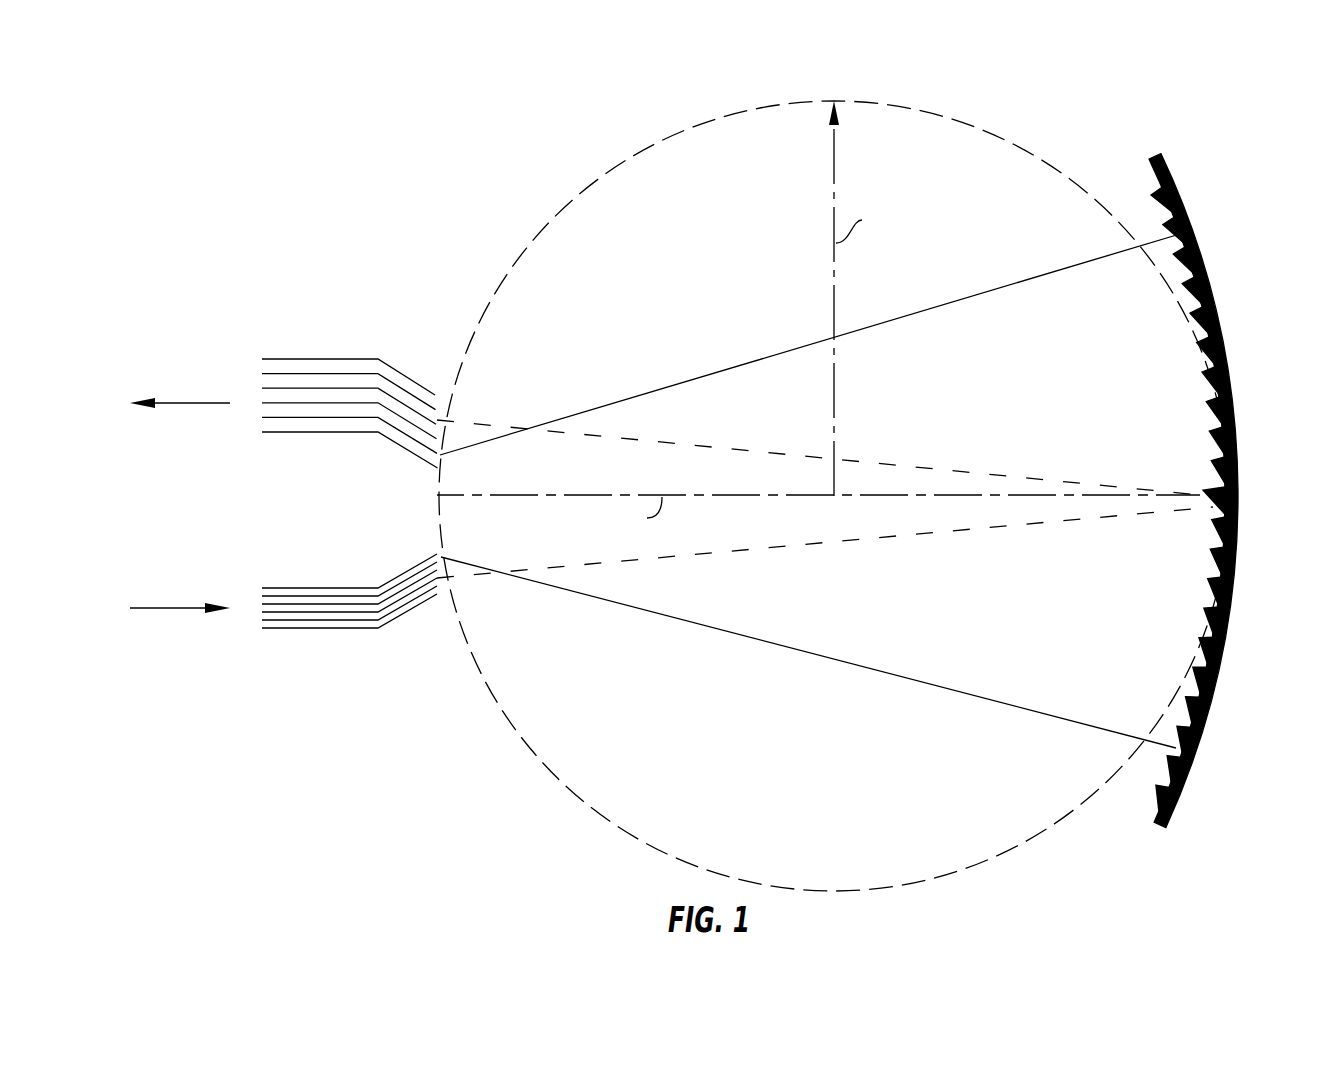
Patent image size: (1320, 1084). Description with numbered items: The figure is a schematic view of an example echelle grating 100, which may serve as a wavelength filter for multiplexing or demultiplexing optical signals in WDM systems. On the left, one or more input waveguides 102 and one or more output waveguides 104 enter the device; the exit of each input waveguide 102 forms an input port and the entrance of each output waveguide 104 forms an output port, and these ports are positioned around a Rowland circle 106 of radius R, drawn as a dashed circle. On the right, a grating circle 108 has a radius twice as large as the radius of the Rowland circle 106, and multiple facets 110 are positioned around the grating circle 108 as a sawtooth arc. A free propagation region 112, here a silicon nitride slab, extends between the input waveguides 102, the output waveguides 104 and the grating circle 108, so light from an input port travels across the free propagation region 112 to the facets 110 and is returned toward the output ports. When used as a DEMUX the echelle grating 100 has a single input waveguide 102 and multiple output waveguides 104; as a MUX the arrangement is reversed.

The echelle grating 100 is at (190, 138).
The input waveguides 102 is at (312, 628).
The output waveguides 104 is at (312, 359).
The Rowland circle 106 is at (850, 790).
The grating circle 108 is at (1224, 633).
The facets 110 is at (1185, 214).
The free propagation region 112 is at (1080, 635).